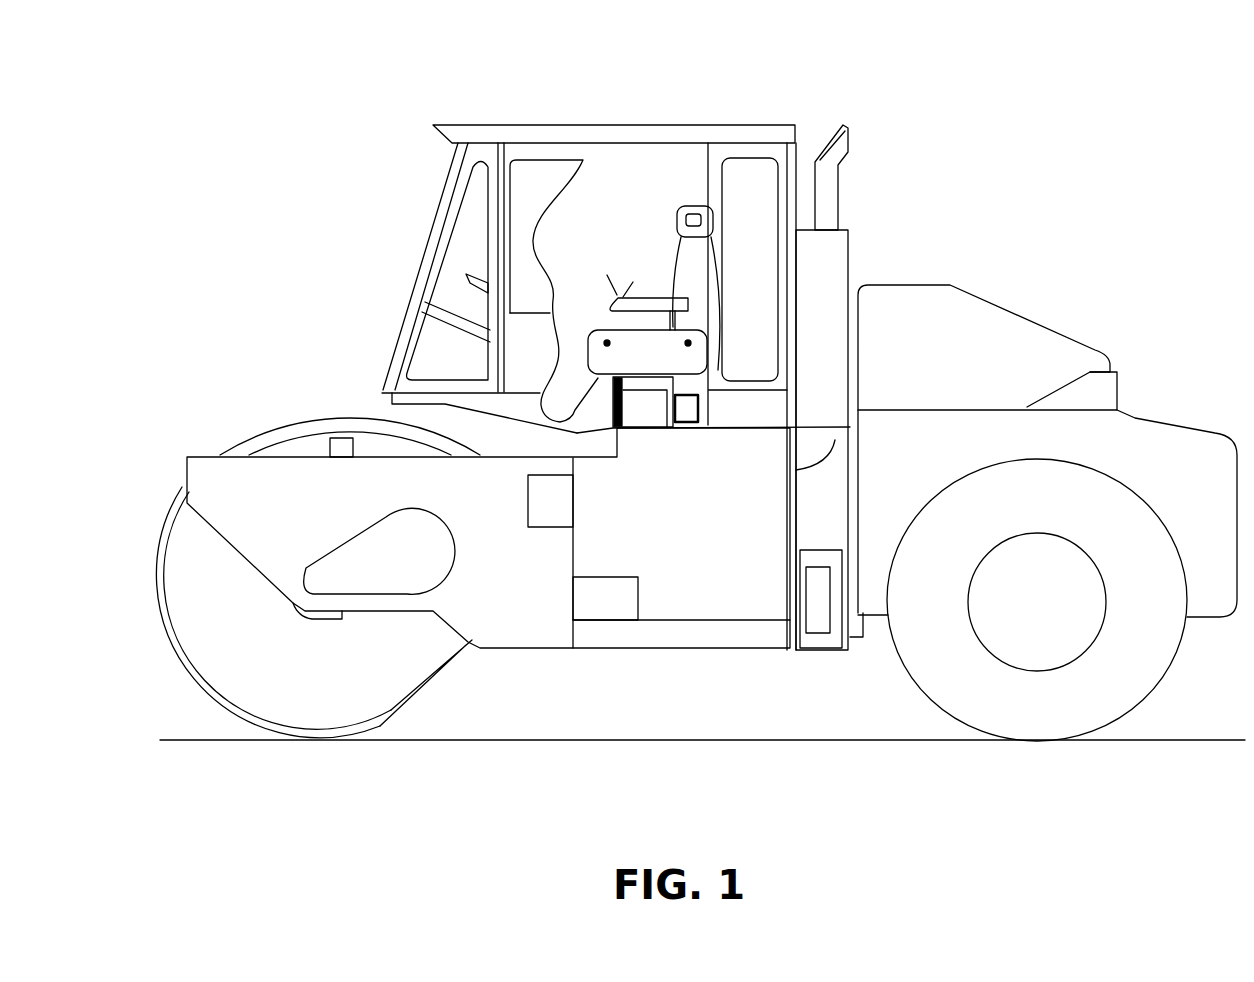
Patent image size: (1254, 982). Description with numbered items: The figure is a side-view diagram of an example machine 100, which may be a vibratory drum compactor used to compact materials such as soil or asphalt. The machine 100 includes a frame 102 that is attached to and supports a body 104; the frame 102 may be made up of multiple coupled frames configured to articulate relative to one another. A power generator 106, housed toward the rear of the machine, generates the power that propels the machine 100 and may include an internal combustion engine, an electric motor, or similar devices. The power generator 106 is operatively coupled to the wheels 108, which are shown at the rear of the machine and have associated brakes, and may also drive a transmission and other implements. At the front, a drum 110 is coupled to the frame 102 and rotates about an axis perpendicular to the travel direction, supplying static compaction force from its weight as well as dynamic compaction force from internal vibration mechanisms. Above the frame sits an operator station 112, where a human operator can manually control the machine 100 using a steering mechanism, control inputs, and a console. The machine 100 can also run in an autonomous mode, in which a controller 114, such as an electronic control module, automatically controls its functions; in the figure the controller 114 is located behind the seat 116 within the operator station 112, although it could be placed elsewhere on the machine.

The machine 100 is at (516, 50).
The frame 102 is at (688, 652).
The body 104 is at (1160, 420).
The power generator 106 is at (990, 300).
The wheels 108 is at (1032, 730).
The drum 110 is at (293, 420).
The operator station 112 is at (653, 121).
The controller 114 is at (688, 424).
The seat 116 is at (705, 330).